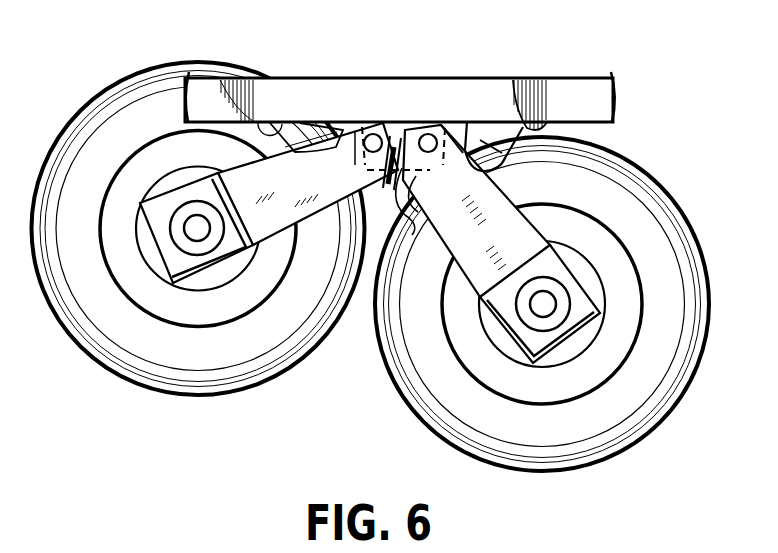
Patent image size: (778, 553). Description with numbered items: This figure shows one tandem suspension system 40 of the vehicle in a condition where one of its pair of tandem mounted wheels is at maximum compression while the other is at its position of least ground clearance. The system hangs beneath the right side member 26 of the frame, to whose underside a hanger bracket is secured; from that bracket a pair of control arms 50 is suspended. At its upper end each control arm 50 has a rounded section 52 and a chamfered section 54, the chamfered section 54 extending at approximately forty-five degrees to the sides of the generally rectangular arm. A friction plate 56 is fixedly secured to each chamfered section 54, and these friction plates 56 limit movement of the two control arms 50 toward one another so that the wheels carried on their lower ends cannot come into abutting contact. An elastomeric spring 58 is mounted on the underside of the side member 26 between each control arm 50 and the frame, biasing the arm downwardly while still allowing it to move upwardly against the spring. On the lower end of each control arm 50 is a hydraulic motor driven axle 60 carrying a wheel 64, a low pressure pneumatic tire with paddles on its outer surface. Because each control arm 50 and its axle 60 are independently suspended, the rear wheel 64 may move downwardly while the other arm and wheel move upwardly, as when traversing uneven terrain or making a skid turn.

The right side member 26 is at (440, 78).
The tandem suspension system 40 is at (478, 94).
The control arm 50 is at (287, 214).
The rounded section 52 is at (392, 104).
The chamfered section 54 is at (367, 168).
The friction plate 56 is at (399, 190).
The elastomeric spring 58 is at (258, 128).
The axle 60 is at (182, 234).
The wheel 64 is at (693, 381).